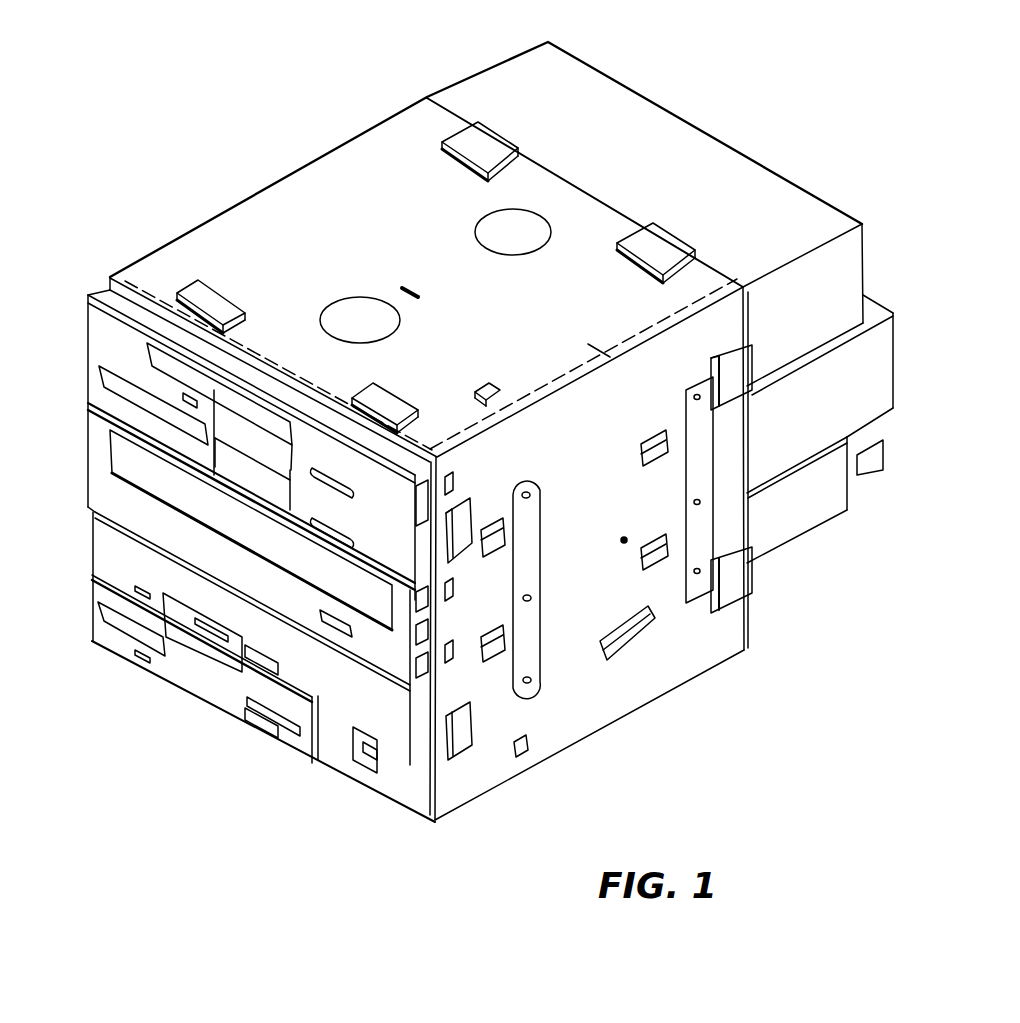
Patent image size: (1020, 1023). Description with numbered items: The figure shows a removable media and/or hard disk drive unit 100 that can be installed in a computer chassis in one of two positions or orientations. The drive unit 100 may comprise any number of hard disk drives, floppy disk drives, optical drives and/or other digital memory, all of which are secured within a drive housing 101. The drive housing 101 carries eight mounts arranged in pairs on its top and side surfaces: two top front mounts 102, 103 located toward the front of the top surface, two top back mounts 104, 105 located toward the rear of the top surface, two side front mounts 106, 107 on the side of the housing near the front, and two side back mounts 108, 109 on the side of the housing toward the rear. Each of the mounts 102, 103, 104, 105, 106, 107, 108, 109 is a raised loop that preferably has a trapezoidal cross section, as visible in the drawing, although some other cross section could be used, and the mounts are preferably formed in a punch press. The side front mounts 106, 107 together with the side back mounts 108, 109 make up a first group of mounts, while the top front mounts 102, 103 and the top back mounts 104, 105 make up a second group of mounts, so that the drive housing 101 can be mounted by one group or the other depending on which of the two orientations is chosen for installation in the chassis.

The drive unit 100 is at (138, 176).
The drive housing 101 is at (310, 162).
The top front mount 102 is at (220, 292).
The top front mount 103 is at (398, 386).
The top back mount 104 is at (496, 132).
The top back mount 105 is at (672, 238).
The side front mount 106 is at (472, 510).
The side front mount 107 is at (472, 724).
The side back mount 108 is at (752, 368).
The side back mount 109 is at (752, 583).